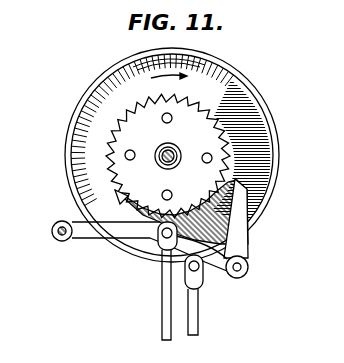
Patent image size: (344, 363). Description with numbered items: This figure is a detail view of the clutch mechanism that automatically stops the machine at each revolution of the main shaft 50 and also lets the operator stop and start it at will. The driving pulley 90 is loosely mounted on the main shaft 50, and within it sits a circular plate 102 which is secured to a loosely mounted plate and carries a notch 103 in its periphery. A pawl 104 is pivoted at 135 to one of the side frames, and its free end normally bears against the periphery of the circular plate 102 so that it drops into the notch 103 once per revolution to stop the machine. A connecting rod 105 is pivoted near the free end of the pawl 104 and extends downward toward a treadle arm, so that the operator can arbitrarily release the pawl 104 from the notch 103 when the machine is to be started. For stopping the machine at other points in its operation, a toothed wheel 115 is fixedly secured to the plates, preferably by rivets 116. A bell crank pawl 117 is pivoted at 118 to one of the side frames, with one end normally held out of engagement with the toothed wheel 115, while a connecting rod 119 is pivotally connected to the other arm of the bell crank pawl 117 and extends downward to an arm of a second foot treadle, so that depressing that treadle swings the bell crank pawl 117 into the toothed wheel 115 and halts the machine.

The main shaft 50 is at (182, 147).
The driving pulley 90 is at (277, 148).
The circular plate 102 is at (117, 199).
The notch 103 is at (181, 212).
The pawl 104 is at (127, 232).
The connecting rod 105 is at (164, 298).
The toothed wheel 115 is at (218, 117).
The rivets 116 is at (161, 119).
The bell crank pawl 117 is at (246, 235).
The pivot 118 is at (249, 266).
The connecting rod 119 is at (199, 309).
The pivot 135 is at (57, 222).